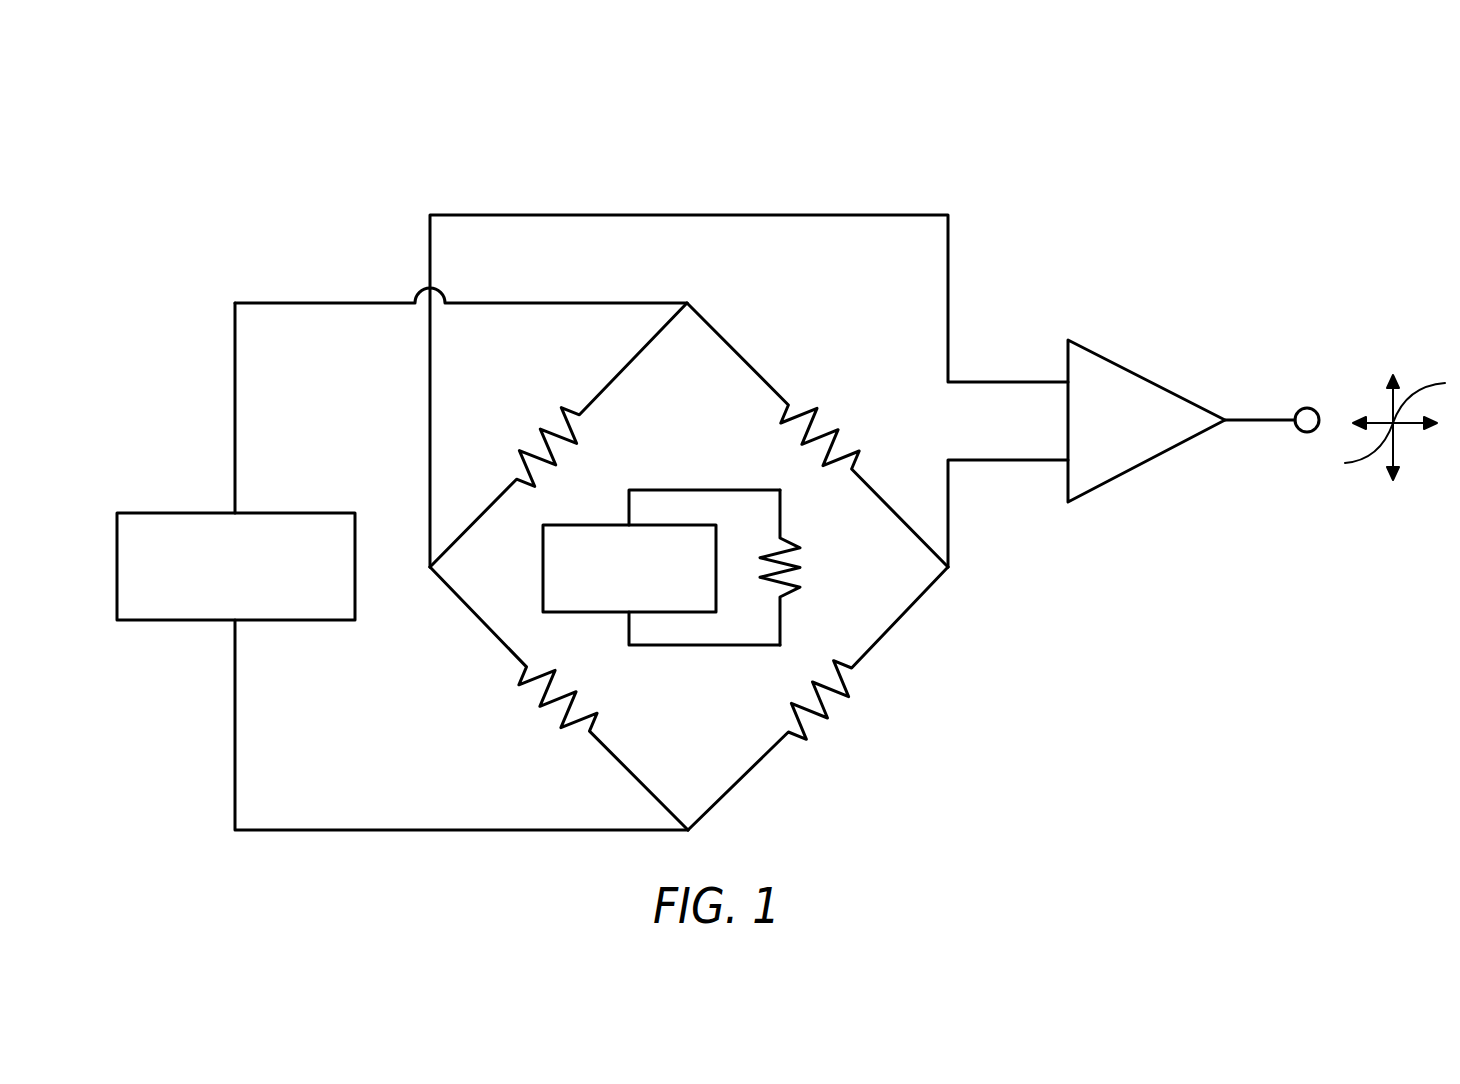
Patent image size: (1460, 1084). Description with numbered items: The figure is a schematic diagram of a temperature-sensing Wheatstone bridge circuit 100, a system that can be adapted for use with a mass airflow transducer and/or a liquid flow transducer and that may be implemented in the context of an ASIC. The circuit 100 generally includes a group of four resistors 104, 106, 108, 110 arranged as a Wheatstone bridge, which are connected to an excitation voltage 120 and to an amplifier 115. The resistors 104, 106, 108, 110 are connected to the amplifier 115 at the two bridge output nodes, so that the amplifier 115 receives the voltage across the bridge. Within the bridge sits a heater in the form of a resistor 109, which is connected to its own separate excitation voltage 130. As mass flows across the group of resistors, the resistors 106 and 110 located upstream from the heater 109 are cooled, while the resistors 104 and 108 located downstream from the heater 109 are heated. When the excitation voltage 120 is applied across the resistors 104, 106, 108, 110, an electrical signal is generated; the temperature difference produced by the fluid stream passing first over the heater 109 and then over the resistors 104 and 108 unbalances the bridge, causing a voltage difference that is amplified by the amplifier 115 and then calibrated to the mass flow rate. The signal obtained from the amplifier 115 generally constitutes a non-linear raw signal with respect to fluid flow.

The bridge circuit 100 is at (1057, 142).
The resistor 104 is at (823, 415).
The resistor 106 is at (540, 425).
The resistor 108 is at (547, 723).
The heater resistor 109 is at (798, 560).
The resistor 110 is at (837, 710).
The amplifier 115 is at (1137, 370).
The excitation voltage 120 is at (170, 513).
The excitation voltage 130 is at (598, 525).